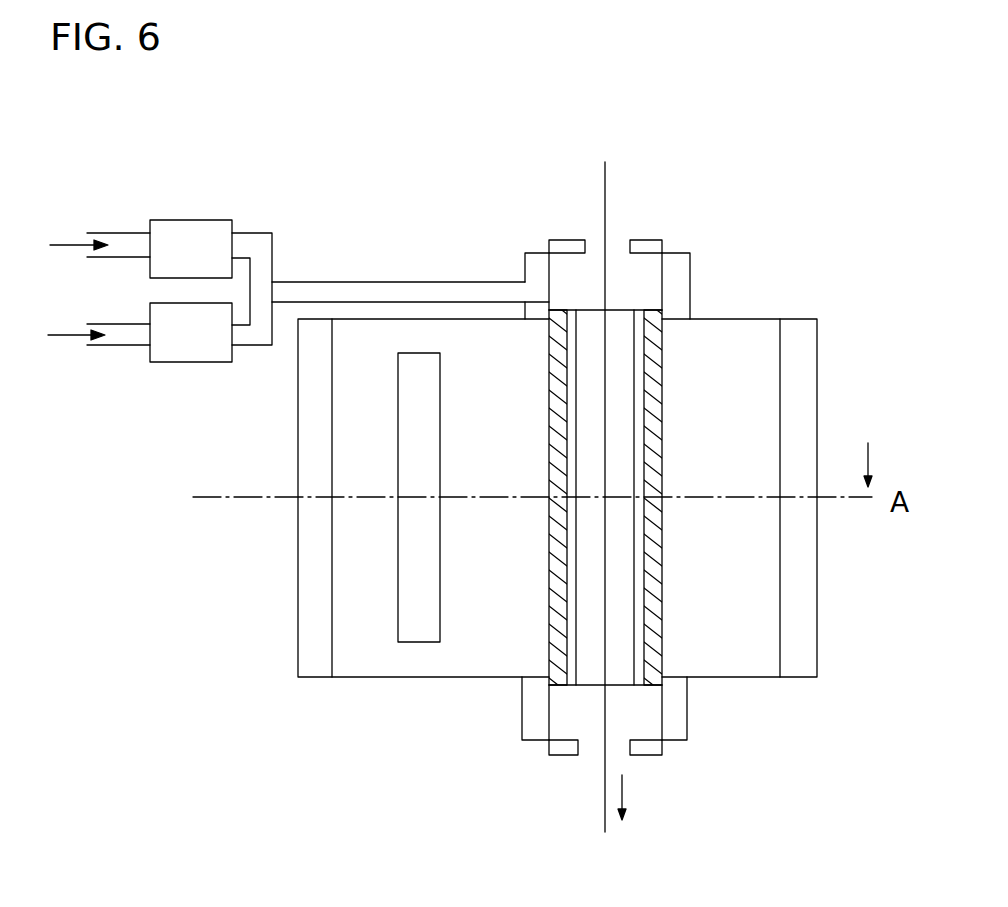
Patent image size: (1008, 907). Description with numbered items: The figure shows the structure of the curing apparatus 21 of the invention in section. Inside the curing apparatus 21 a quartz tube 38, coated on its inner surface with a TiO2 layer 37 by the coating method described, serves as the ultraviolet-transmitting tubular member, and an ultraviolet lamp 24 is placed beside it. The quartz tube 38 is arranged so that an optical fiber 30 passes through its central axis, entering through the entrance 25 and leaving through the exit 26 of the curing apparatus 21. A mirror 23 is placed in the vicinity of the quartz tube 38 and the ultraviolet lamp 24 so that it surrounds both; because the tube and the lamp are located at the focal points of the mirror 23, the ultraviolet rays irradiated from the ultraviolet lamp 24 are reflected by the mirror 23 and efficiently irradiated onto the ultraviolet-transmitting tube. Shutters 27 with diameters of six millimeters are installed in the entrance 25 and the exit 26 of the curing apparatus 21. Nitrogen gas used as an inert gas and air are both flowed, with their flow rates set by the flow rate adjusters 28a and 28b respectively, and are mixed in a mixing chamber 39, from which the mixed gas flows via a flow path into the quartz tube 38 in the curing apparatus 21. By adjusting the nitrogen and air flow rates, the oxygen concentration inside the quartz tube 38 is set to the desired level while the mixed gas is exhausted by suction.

The curing apparatus 21 is at (830, 395).
The mirror 23 is at (332, 408).
The ultraviolet lamp 24 is at (415, 572).
The entrance 25 is at (613, 253).
The exit 26 is at (595, 745).
The shutters 27 is at (565, 240).
The flow rate adjuster 28a is at (193, 232).
The flow rate adjuster 28b is at (181, 343).
The optical fiber 30 is at (608, 188).
The TiO2 layer 37 is at (578, 687).
The quartz tube 38 is at (663, 383).
The mixing chamber 39 is at (257, 252).